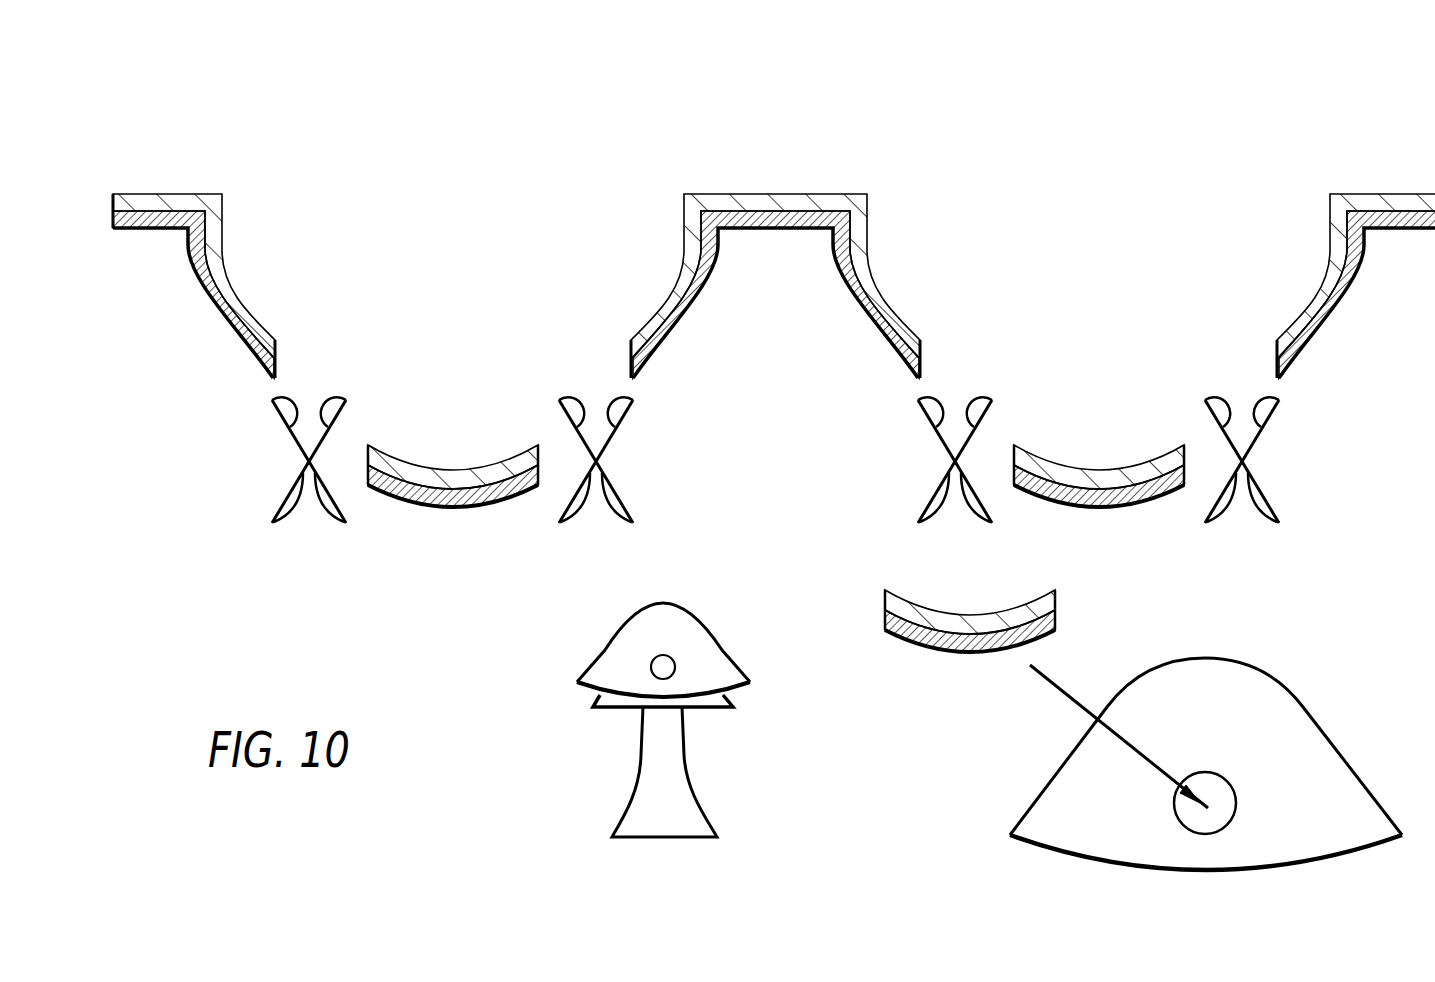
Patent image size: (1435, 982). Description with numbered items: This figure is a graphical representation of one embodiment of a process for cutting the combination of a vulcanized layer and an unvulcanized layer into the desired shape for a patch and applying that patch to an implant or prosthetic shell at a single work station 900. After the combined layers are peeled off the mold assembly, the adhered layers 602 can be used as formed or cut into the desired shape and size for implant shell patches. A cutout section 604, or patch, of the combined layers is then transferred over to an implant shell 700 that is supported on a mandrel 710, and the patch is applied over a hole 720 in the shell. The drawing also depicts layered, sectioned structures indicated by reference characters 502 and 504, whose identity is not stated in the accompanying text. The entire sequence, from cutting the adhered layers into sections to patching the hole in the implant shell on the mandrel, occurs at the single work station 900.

The single work station 900 is at (1210, 113).
The outer layer of frame member 502 is at (872, 295).
The inner layer of frame member 504 is at (897, 347).
The adhered layers 602 is at (293, 485).
The cutout section 604 is at (487, 465).
The implant shell 700 is at (687, 632).
The mandrel 710 is at (652, 800).
The hole 720 is at (664, 668).